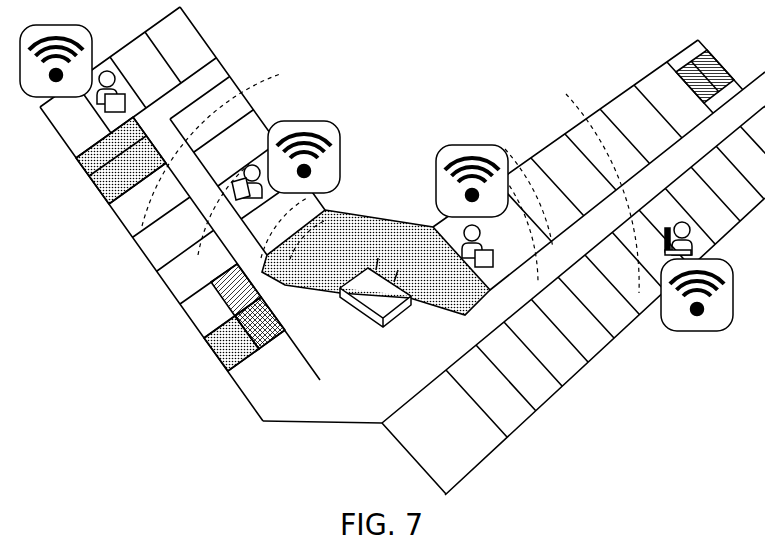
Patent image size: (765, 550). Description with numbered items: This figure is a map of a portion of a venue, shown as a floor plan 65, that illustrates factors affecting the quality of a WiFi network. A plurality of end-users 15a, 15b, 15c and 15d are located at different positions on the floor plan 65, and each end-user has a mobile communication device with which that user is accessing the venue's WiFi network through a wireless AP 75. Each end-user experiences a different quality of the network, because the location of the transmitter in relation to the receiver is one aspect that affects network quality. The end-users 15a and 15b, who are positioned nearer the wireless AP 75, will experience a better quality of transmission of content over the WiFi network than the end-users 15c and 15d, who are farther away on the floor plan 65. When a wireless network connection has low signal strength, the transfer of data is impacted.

The end-user 15a is at (447, 230).
The end-user 15b is at (245, 162).
The end-user 15c is at (104, 68).
The end-user 15d is at (698, 249).
The floor plan 65 is at (596, 58).
The wireless AP 75 is at (348, 300).